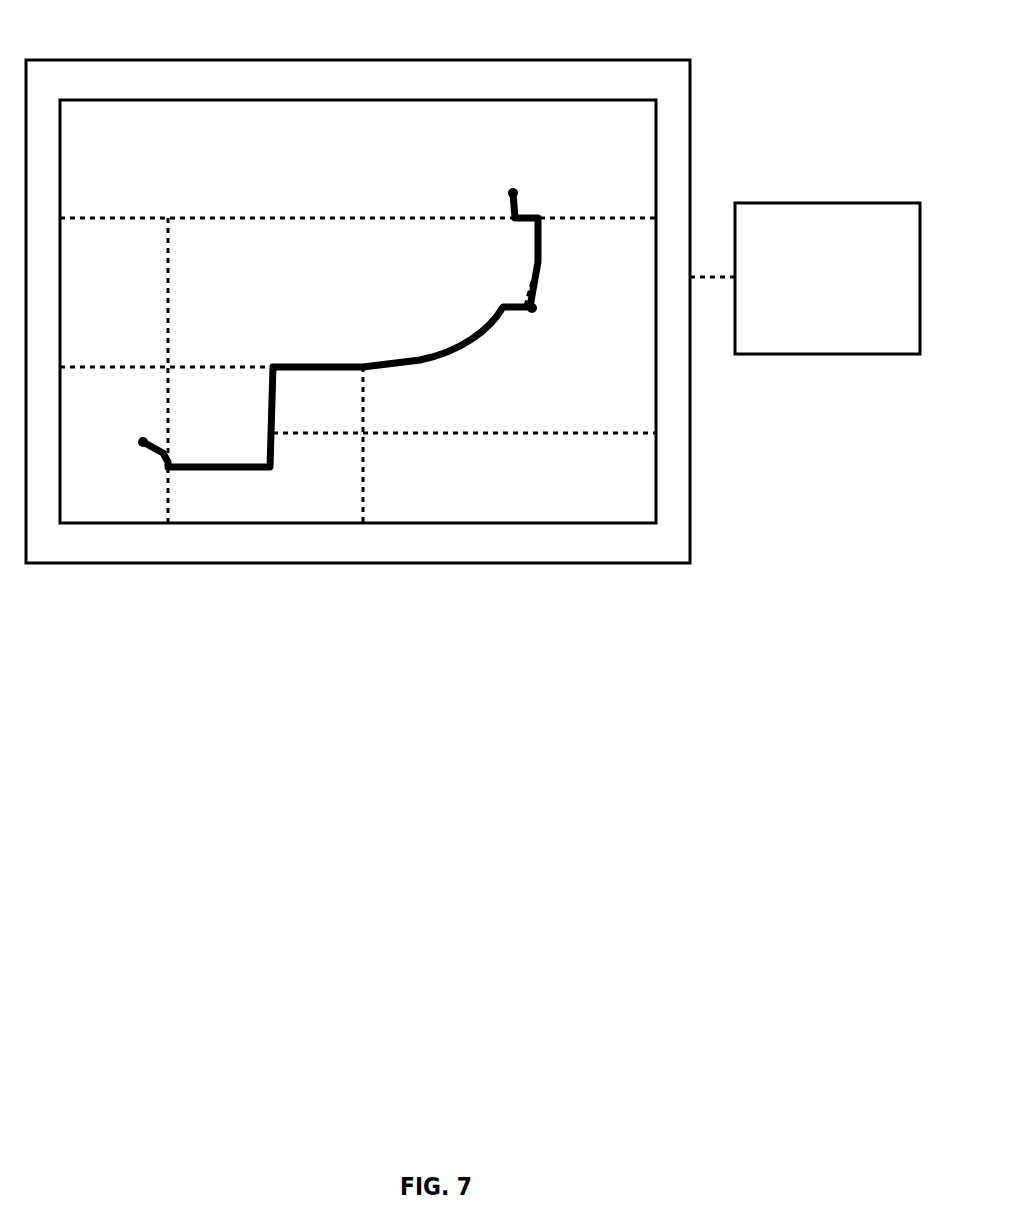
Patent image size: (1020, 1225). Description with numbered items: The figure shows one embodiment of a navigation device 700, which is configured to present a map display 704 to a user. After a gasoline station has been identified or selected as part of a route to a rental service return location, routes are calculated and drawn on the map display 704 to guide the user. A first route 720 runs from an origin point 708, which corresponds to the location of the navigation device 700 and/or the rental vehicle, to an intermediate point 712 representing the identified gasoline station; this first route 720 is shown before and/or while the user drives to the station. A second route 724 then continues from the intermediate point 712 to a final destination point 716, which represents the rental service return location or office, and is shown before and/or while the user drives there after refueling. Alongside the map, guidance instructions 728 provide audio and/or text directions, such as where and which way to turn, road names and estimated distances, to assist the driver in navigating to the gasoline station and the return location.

The navigation device 700 is at (533, 60).
The map display 704 is at (593, 172).
The origin point 708 is at (140, 442).
The intermediate point 712 is at (536, 308).
The final destination point 716 is at (513, 193).
The first route 720 is at (320, 367).
The second route 724 is at (540, 257).
The guidance instructions 728 is at (847, 327).